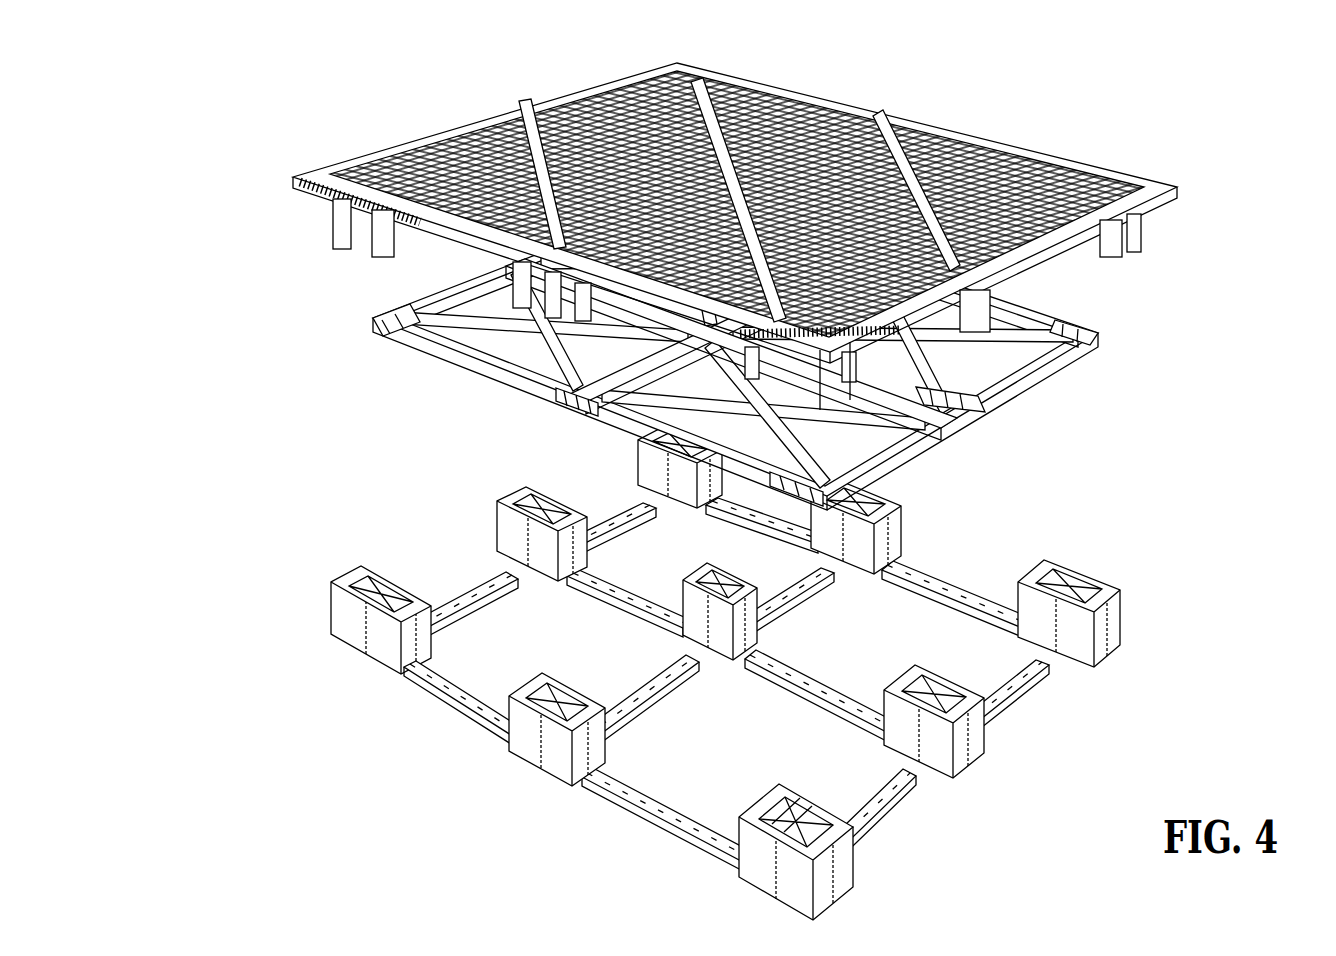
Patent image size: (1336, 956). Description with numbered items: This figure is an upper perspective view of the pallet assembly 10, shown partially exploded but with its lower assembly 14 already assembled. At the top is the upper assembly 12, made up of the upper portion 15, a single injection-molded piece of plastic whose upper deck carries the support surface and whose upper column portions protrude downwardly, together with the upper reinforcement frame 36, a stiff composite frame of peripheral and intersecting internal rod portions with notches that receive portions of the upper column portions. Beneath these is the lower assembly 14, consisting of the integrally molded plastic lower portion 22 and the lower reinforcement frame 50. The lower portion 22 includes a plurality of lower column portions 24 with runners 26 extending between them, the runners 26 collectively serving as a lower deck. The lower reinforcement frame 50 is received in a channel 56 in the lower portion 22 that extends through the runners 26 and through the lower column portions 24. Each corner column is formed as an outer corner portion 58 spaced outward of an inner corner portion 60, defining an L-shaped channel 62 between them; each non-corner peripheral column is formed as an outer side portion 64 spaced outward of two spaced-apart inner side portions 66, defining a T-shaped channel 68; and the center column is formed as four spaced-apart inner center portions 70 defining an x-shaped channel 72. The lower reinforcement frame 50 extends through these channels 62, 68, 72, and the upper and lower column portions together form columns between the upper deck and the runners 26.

The pallet assembly 10 is at (195, 692).
The upper assembly 12 is at (275, 351).
The lower assembly 14 is at (340, 640).
The upper portion 15 is at (1080, 157).
The upper reinforcement frame 36 is at (1106, 325).
The lower portion 22 is at (1130, 645).
The lower column portions 24 is at (985, 757).
The runners 26 is at (965, 812).
The lower reinforcement frame 50 is at (887, 803).
The channel 56 is at (905, 820).
The outer corner portion 58 is at (775, 870).
The inner corner portion 60 is at (775, 785).
The L-shaped channel 62 is at (762, 790).
The outer side portion 64 is at (560, 792).
The inner side portions 66 is at (600, 690).
The T-shaped channel 68 is at (562, 700).
The inner center portions 70 is at (690, 660).
The x-shaped channel 72 is at (780, 653).